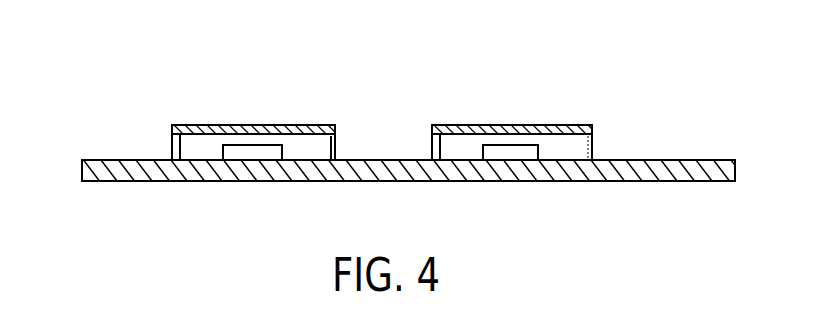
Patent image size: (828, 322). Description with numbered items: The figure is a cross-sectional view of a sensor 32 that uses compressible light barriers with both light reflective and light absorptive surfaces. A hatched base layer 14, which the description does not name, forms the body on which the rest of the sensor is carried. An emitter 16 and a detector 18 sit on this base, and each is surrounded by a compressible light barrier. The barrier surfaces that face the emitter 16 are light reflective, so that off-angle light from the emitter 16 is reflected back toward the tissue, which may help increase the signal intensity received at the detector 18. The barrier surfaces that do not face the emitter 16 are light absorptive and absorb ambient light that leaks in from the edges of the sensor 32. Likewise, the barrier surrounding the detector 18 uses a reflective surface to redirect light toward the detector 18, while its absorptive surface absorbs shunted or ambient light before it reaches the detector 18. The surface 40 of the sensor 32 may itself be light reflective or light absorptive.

The substrate 14 is at (95, 173).
The emitter 16 is at (248, 153).
The detector 18 is at (507, 153).
The sensor 32 is at (223, 124).
The surface of the sensor 40 is at (110, 160).